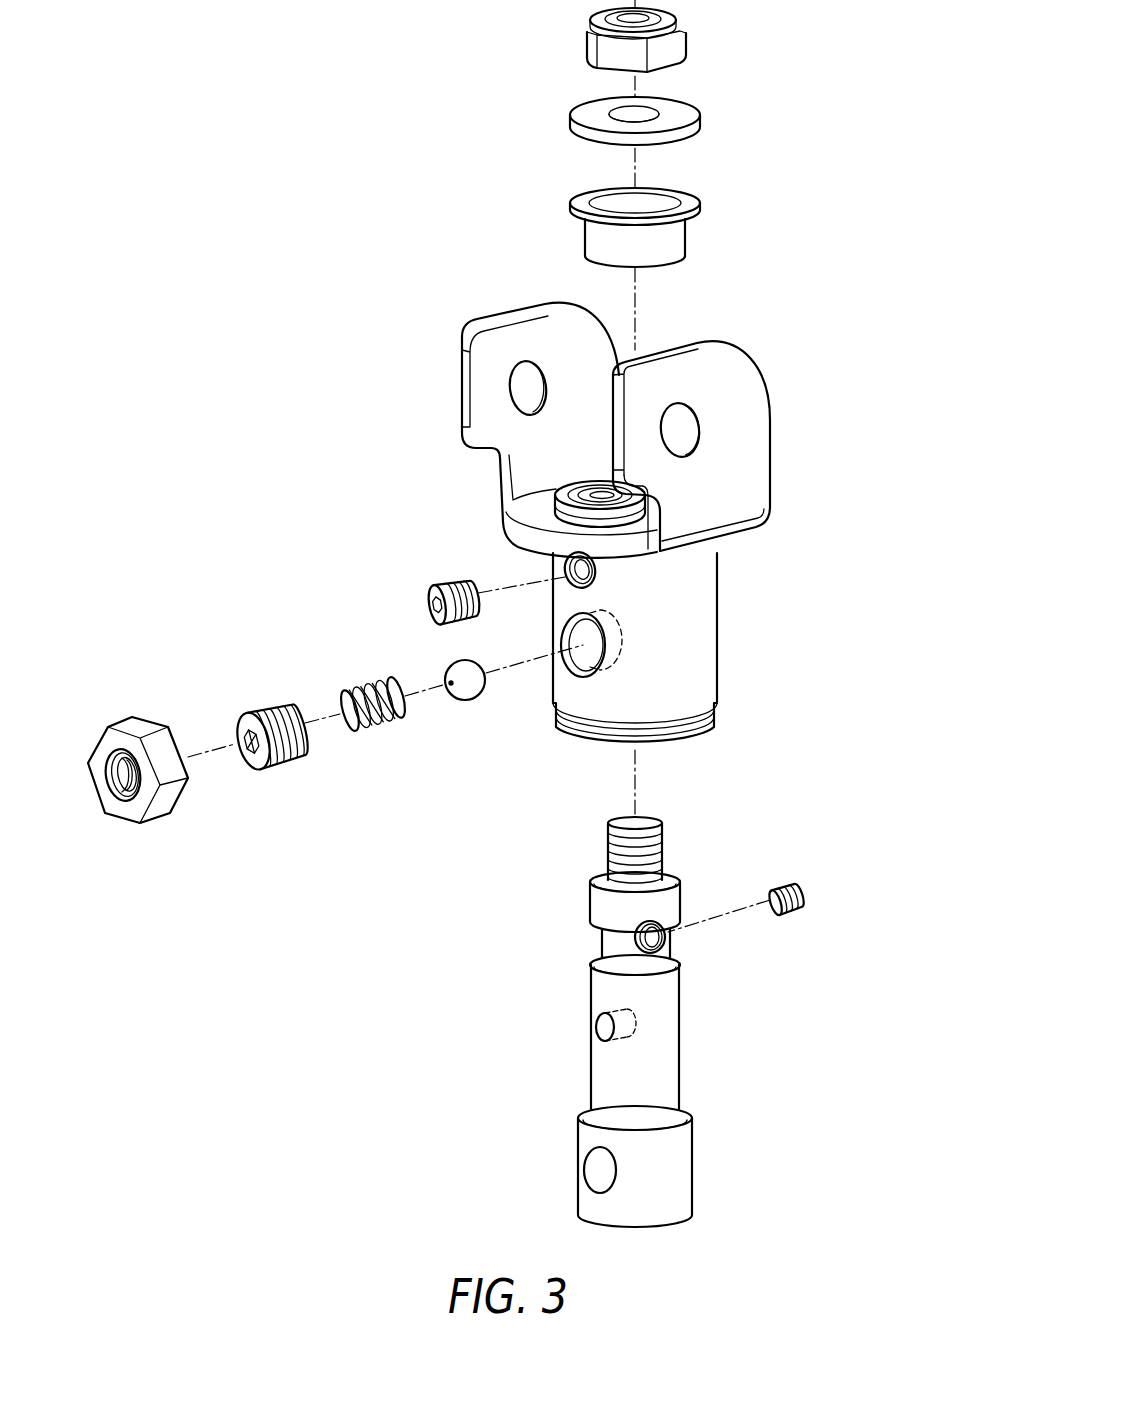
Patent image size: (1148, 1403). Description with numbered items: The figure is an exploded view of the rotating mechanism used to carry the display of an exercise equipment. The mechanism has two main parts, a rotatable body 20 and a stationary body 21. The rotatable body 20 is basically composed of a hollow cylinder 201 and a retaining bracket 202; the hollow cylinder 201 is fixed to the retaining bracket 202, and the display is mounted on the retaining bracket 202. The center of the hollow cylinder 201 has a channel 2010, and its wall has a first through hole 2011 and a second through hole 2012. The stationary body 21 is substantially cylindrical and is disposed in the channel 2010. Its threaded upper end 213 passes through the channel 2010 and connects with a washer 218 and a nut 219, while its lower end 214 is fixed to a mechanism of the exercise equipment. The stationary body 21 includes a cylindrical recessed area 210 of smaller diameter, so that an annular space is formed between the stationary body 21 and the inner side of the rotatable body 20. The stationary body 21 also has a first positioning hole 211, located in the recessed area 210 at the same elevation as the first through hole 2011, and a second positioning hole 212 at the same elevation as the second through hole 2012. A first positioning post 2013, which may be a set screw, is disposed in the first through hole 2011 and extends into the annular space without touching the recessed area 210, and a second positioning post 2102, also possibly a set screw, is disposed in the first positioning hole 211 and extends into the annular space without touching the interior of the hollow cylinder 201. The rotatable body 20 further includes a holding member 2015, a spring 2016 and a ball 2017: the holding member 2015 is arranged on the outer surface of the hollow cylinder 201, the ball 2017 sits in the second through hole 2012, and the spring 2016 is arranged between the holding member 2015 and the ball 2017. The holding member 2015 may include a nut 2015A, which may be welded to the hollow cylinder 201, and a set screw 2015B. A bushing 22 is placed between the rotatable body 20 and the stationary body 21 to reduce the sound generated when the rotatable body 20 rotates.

The nut 219 is at (685, 48).
The washer 218 is at (693, 127).
The bushing 22 is at (672, 240).
The rotatable body 20 is at (806, 577).
The retaining bracket 202 is at (760, 428).
The channel 2010 is at (598, 492).
The hollow cylinder 201 is at (703, 673).
The first through hole 2011 is at (568, 578).
The second through hole 2012 is at (570, 672).
The first positioning post 2013 is at (430, 603).
The ball 2017 is at (464, 696).
The spring 2016 is at (382, 728).
The holding member 2015 is at (208, 819).
The nut 2015A is at (158, 805).
The set screw 2015B is at (275, 796).
The stationary body 21 is at (706, 1043).
The upper end 213 is at (662, 840).
The recessed area 210 is at (605, 945).
The first positioning hole 211 is at (670, 934).
The second positioning post 2102 is at (803, 898).
The second positioning hole 212 is at (597, 1032).
The lower end 214 is at (672, 1190).